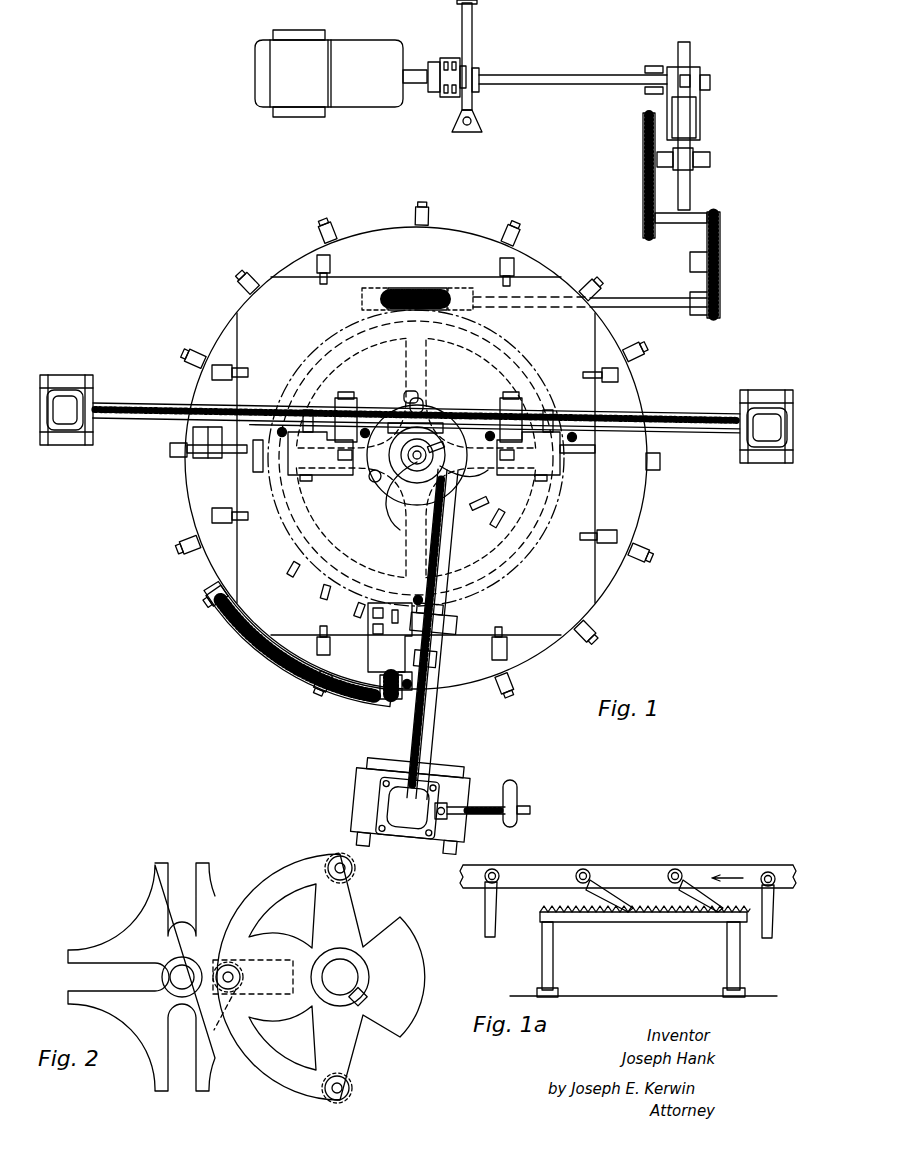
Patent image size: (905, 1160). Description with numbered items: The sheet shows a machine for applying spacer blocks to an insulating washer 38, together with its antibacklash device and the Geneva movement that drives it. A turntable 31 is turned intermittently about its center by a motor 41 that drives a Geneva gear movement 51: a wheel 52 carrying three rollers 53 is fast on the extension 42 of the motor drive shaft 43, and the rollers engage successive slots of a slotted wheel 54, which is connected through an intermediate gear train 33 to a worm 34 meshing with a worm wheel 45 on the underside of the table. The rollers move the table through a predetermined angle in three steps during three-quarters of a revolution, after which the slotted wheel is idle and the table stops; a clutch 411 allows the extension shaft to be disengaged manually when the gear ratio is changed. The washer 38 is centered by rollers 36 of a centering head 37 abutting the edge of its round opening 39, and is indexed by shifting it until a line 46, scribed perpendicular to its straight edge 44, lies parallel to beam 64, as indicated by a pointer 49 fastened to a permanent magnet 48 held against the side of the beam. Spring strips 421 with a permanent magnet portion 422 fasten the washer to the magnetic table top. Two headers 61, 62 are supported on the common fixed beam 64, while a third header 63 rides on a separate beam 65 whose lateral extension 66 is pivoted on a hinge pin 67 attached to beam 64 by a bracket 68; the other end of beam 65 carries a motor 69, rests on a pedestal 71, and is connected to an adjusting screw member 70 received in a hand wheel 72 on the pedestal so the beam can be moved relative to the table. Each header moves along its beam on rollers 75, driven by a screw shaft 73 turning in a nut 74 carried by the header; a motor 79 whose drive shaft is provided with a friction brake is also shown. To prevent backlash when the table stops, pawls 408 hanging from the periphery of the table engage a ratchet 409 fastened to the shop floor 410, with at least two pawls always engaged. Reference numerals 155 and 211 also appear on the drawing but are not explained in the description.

In FIG. 1, the turntable 31 is at (622, 563).
In FIG. 1A, the turntable 31 is at (560, 862).
In FIG. 1, the intermediate gear train 33 is at (756, 250).
In FIG. 1, the worm 34 is at (430, 290).
In FIG. 1, the rollers 36 is at (416, 451).
In FIG. 1, the centering head 37 is at (396, 552).
In FIG. 1, the washer 38 is at (372, 276).
In FIG. 1, the round opening 39 is at (427, 496).
In FIG. 1, the motor 41 is at (313, 79).
In FIG. 1, the extension shaft 42 is at (583, 70).
In FIG. 2, the extension shaft 42 is at (345, 975).
In FIG. 1, the motor drive shaft 43 is at (436, 62).
In FIG. 1, the straight edge 44 is at (237, 550).
In FIG. 1, the worm wheel 45 is at (515, 347).
In FIG. 1, the line 46 is at (598, 462).
In FIG. 1, the permanent magnet 48 is at (198, 456).
In FIG. 1, the pointer 49 is at (240, 460).
In FIG. 1, the Geneva gear movement 51 is at (740, 138).
In FIG. 2, the Geneva gear movement 51 is at (253, 1060).
In FIG. 1, the wheel 52 is at (688, 50).
In FIG. 2, the wheel 52 is at (283, 874).
In FIG. 1, the rollers 53 is at (695, 79).
In FIG. 2, the rollers 53 is at (353, 870).
In FIG. 1, the slotted wheel 54 is at (685, 190).
In FIG. 2, the slotted wheel 54 is at (128, 902).
In FIG. 1, the header 61 is at (320, 470).
In FIG. 1, the header 62 is at (555, 476).
In FIG. 1, the third header 63 is at (402, 654).
In FIG. 1, the beam 64 is at (157, 404).
In FIG. 1, the beam 65 is at (432, 720).
In FIG. 1, the lateral extension 66 is at (488, 441).
In FIG. 1, the hinge pin 67 is at (418, 465).
In FIG. 1, the bracket 68 is at (436, 423).
In FIG. 1, the motor 69 is at (85, 405).
In FIG. 1, the adjusting screw member 70 is at (470, 805).
In FIG. 1, the pedestal 71 is at (70, 382).
In FIG. 1, the hand wheel 72 is at (513, 792).
In FIG. 1, the screw shaft 73 is at (178, 420).
In FIG. 1, the nut 74 is at (335, 408).
In FIG. 1, the rollers 75 is at (278, 433).
In FIG. 1, the motor 79 is at (352, 397).
In FIG. 1, the pins 155 is at (318, 592).
In FIG. 1, the key 211 is at (705, 88).
In FIG. 2, the key 211 is at (366, 998).
In FIG. 1, the pawls 408 is at (395, 214).
In FIG. 1A, the pawls 408 is at (485, 900).
In FIG. 1, the ratchet 409 is at (305, 676).
In FIG. 1A, the ratchet 409 is at (645, 918).
In FIG. 1A, the shop floor 410 is at (625, 995).
In FIG. 1, the clutch 411 is at (448, 97).
In FIG. 1, the spring strips 421 is at (248, 372).
In FIG. 1, the permanent magnet portion 422 is at (628, 350).